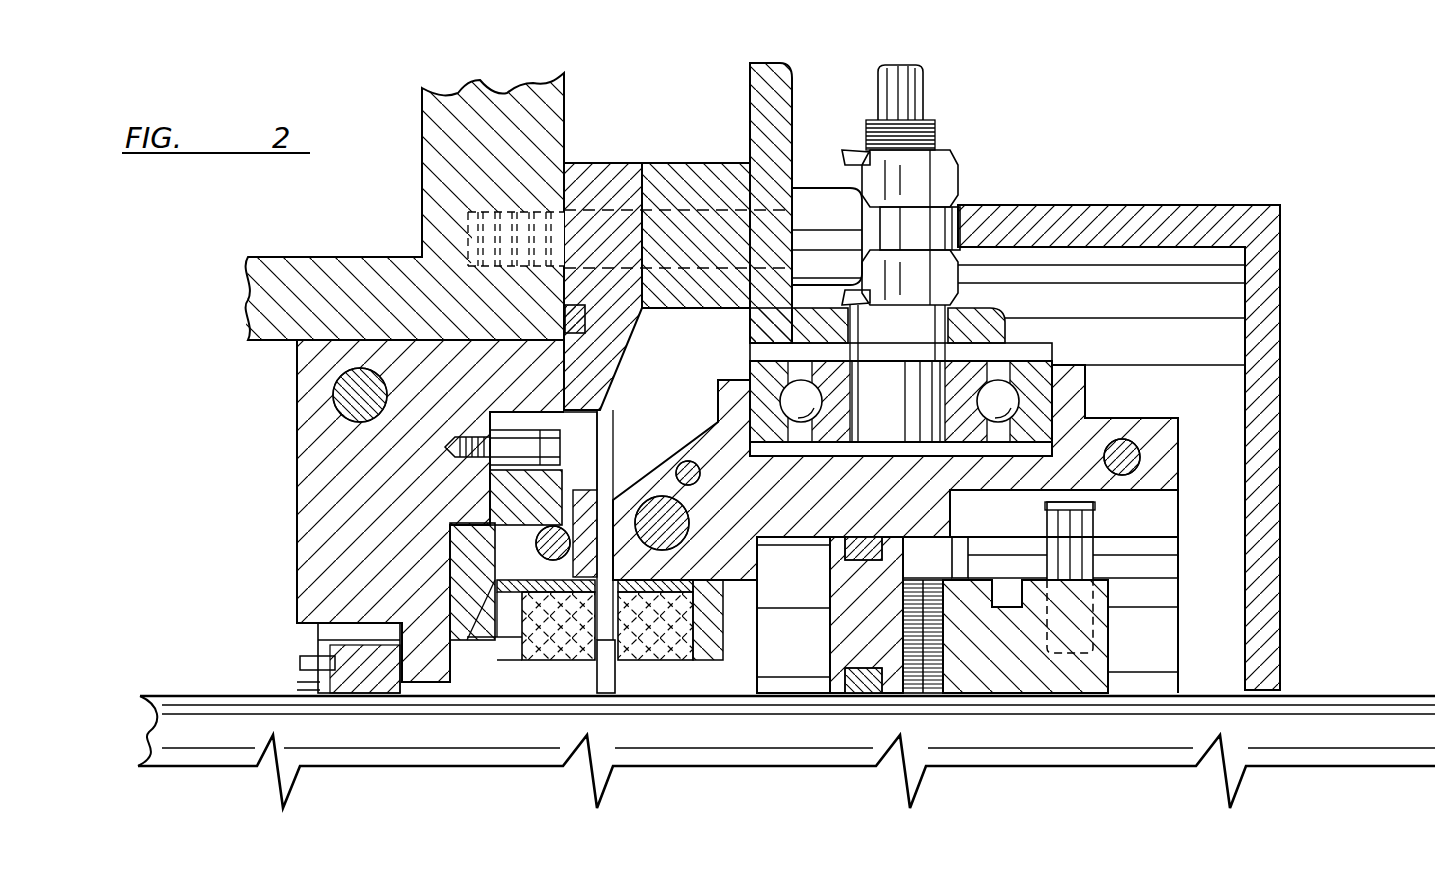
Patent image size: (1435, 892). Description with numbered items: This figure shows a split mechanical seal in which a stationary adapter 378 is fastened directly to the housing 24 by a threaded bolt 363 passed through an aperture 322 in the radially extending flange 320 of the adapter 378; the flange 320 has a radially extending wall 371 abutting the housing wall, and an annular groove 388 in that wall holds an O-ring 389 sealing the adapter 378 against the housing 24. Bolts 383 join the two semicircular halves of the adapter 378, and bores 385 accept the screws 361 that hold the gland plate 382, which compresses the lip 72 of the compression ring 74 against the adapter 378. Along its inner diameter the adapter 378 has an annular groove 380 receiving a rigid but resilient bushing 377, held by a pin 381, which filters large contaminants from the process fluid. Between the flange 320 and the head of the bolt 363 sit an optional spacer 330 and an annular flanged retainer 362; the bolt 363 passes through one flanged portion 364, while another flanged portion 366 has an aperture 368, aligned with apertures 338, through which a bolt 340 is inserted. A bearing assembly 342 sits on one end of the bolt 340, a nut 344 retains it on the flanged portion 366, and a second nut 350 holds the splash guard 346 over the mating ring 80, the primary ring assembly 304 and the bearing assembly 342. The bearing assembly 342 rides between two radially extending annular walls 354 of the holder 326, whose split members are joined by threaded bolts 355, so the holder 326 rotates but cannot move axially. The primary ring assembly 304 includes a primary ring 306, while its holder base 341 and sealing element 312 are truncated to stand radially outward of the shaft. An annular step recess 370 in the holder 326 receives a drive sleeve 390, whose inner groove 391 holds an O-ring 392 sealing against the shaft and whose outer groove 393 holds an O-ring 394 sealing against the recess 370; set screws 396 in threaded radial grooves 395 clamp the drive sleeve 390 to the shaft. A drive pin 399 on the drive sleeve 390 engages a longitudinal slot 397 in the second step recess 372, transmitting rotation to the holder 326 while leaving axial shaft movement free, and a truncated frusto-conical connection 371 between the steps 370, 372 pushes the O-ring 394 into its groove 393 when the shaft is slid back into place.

The housing 24 is at (540, 128).
The lip 72 is at (447, 533).
The compression ring 74 is at (490, 628).
The mating ring 80 is at (548, 683).
The primary ring assembly 304 is at (655, 677).
The primary ring 306 is at (637, 645).
The sealing element 312 is at (615, 655).
The radially extending flange 320 is at (608, 170).
The aperture 322 is at (630, 180).
The holder 326 is at (1118, 433).
The spacer 330 is at (724, 168).
The apertures 338 is at (913, 213).
The bolt 340 is at (903, 332).
The holder base 341 is at (747, 630).
The bearing assembly 342 is at (1038, 412).
The nut 344 is at (1030, 203).
The splash guard 346 is at (1168, 233).
The second nut 350 is at (950, 160).
The radially extending annular walls 354 is at (1085, 409).
The threaded bolts 355 is at (1127, 457).
The screws 361 is at (445, 447).
The annular flanged retainer 362 is at (792, 92).
The threaded bolt 363 is at (818, 215).
The flanged portion 364 is at (765, 70).
The flanged portion 366 is at (1000, 327).
The aperture 368 is at (953, 297).
The annular step recess 370 is at (790, 543).
The radially extending wall 371 is at (563, 190).
The second step recess 372 is at (1095, 505).
The bushing 377 is at (325, 645).
The adapter 378 is at (297, 343).
The annular groove 380 is at (320, 628).
The pin 381 is at (300, 663).
The gland plate 382 is at (508, 483).
The bolts 383 is at (337, 377).
The bores 385 is at (480, 452).
The annular groove 388 is at (575, 318).
The O-ring 389 is at (433, 360).
The drive sleeve 390 is at (1042, 675).
The annular groove 391 is at (880, 690).
The O-ring 392 is at (857, 690).
The second annular groove 393 is at (857, 552).
The O-ring 394 is at (863, 560).
The threaded radially extending grooves 395 is at (943, 633).
The set screws 396 is at (992, 600).
The longitudinal slot 397 is at (1158, 548).
The drive pin 399 is at (1158, 560).